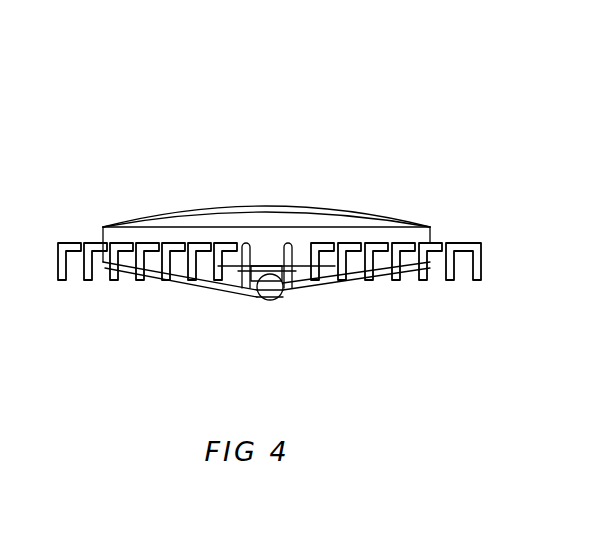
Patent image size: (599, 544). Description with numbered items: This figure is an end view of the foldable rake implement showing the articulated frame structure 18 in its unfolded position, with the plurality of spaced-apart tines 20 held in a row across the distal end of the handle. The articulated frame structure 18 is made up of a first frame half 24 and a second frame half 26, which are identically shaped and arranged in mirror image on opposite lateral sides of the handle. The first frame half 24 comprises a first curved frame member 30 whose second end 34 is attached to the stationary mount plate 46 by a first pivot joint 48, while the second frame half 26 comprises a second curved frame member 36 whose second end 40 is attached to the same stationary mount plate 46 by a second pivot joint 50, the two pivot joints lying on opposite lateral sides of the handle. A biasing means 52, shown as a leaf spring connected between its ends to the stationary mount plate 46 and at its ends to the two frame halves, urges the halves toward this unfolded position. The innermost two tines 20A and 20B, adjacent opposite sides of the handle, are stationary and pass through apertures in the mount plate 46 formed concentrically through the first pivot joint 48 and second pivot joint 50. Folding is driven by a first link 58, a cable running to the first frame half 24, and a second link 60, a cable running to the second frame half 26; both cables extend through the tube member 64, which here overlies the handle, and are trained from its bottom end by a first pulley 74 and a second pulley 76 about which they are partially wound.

The articulated frame structure 18 is at (215, 90).
The tines 20 is at (112, 280).
The innermost tine of first frame half 20A is at (248, 292).
The innermost tine of second frame half 20B is at (318, 292).
The first frame half 24 is at (138, 227).
The second frame half 26 is at (394, 231).
The first curved frame member 30 is at (112, 233).
The second end of first curved frame member 34 is at (263, 243).
The second curved frame member 36 is at (430, 227).
The second end of second curved frame member 40 is at (290, 243).
The stationary mount plate 46 is at (277, 243).
The first pivot joint 48 is at (242, 243).
The second pivot joint 50 is at (308, 243).
The biasing means 52 is at (207, 243).
The first link 58 is at (228, 296).
The second link 60 is at (365, 292).
The tube member 64 is at (262, 297).
The first pulley 74 is at (258, 297).
The second pulley 76 is at (278, 298).